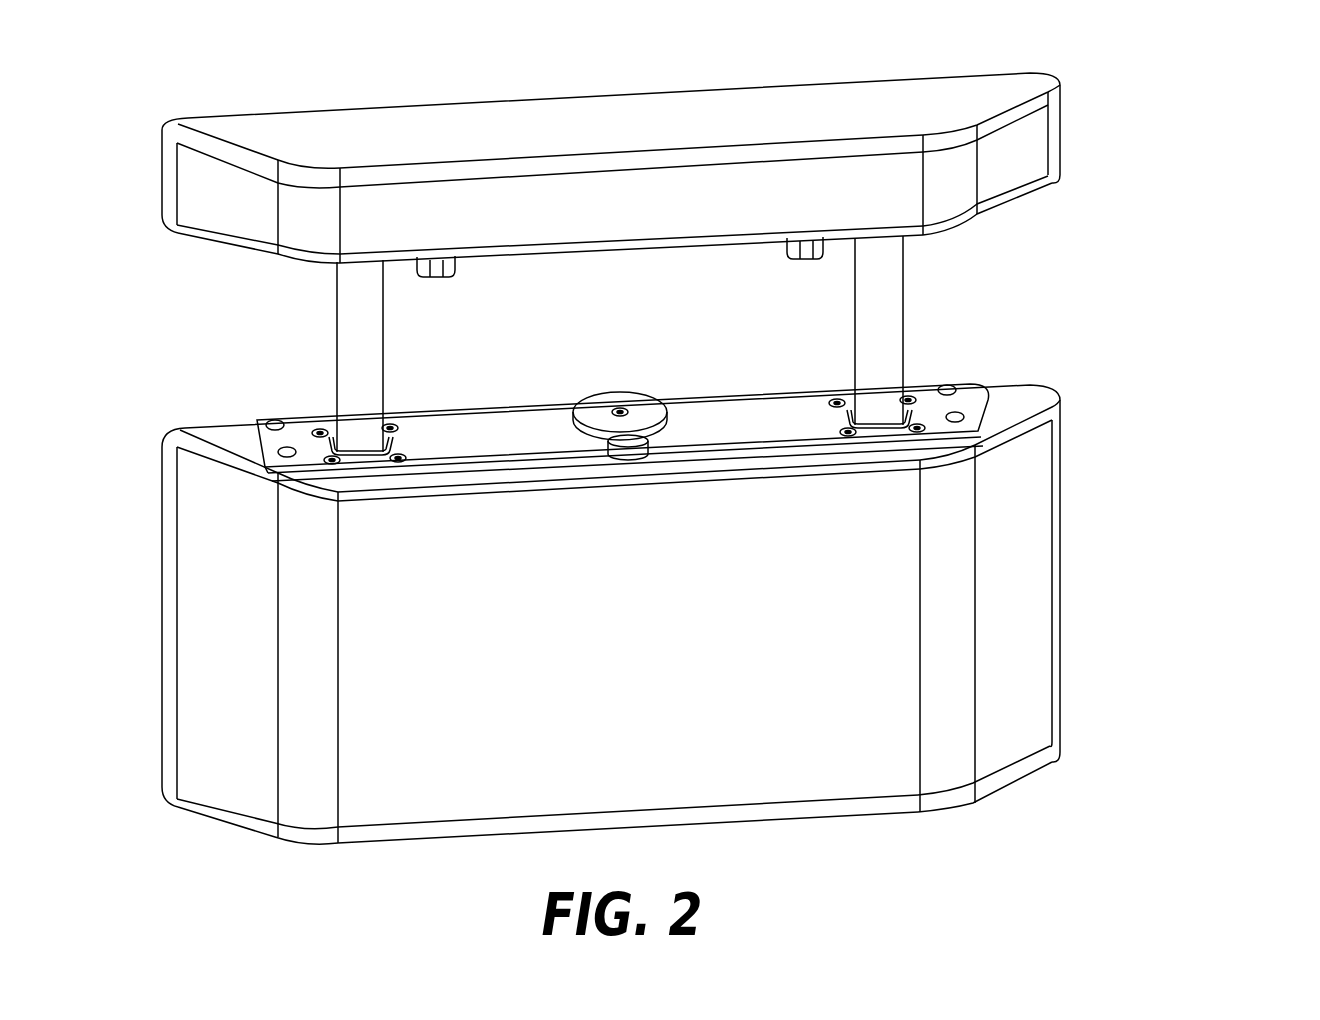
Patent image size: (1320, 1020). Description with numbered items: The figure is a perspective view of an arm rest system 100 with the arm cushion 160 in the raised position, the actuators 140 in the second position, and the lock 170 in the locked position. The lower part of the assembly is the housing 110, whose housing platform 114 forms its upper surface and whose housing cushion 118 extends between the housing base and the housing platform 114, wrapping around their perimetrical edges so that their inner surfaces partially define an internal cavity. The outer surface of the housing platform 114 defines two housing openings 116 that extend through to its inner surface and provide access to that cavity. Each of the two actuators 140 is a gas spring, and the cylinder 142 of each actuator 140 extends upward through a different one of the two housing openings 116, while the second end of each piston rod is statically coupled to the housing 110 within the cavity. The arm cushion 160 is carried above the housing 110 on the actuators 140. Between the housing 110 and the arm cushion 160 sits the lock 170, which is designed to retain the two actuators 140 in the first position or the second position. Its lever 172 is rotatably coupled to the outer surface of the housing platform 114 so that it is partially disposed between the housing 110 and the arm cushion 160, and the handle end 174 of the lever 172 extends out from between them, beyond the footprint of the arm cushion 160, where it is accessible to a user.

The arm rest system 100 is at (1142, 127).
The housing 110 is at (1102, 509).
The housing platform 114 is at (958, 405).
The housing openings 116 is at (401, 440).
The housing cushion 118 is at (1032, 694).
The actuators 140 is at (404, 326).
The cylinder 142 is at (337, 358).
The arm cushion 160 is at (585, 117).
The lock 170 is at (586, 372).
The lever 172 is at (647, 385).
The handle end 174 is at (634, 441).